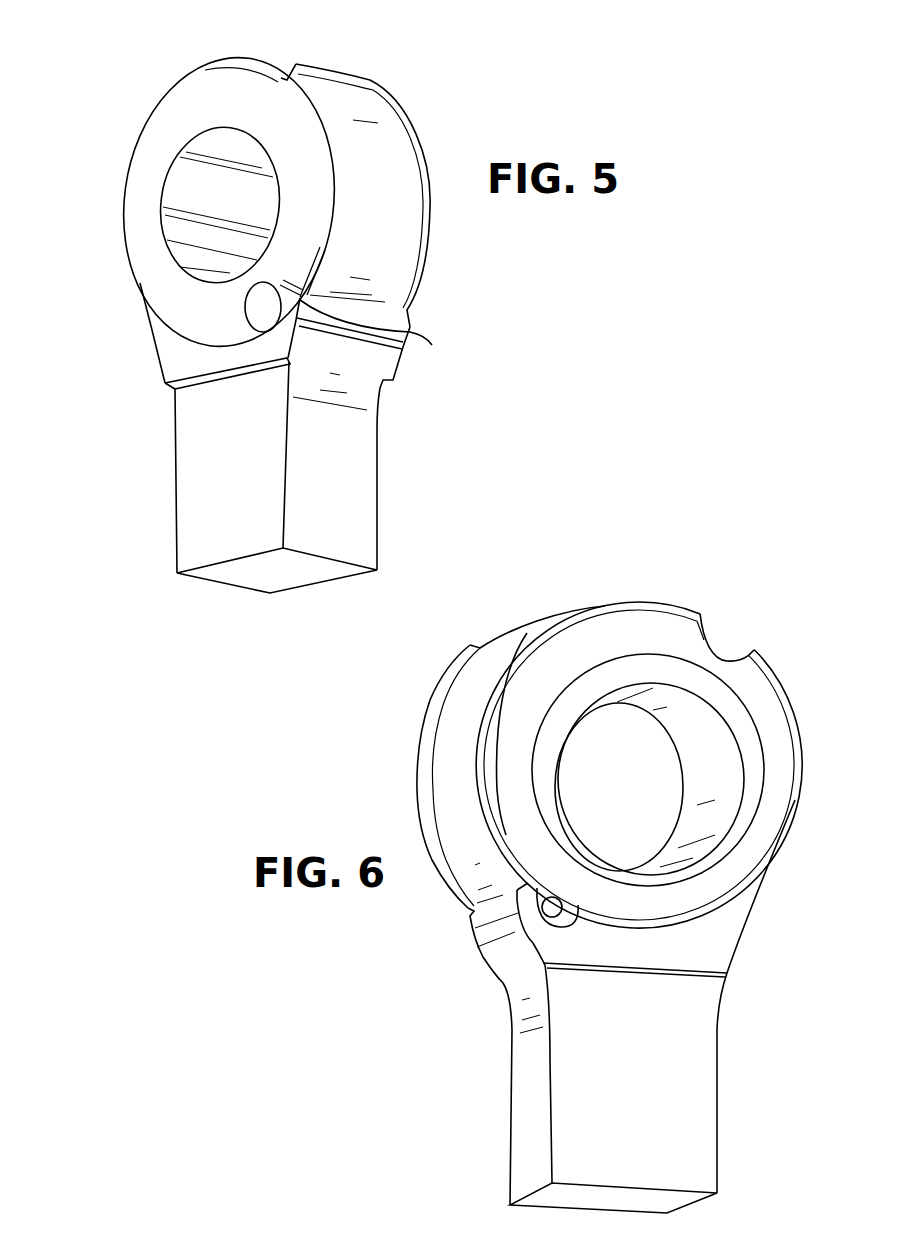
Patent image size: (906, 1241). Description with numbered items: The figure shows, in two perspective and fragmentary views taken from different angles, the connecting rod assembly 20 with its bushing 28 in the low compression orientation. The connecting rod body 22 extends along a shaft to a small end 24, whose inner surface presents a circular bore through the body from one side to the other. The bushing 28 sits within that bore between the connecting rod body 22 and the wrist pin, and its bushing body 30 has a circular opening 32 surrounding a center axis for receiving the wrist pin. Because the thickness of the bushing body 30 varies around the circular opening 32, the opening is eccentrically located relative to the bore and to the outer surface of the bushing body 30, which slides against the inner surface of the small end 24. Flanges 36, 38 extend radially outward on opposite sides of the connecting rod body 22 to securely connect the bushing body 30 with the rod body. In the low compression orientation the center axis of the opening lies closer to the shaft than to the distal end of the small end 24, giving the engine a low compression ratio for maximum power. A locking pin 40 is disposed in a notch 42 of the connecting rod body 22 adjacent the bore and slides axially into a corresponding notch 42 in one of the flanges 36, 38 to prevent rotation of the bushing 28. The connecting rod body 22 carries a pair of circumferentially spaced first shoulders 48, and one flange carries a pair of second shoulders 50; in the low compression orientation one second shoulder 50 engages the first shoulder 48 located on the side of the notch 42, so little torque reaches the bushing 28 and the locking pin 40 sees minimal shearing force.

In FIG. 5, the connecting rod assembly 20 is at (430, 108).
In FIG. 6, the connecting rod assembly 20 is at (466, 1054).
In FIG. 5, the connecting rod body 22 is at (380, 457).
In FIG. 6, the connecting rod body 22 is at (503, 1127).
In FIG. 5, the small end 24 is at (371, 92).
In FIG. 6, the small end 24 is at (540, 627).
In FIG. 5, the bushing 28 is at (125, 153).
In FIG. 6, the bushing 28 is at (776, 866).
In FIG. 5, the bushing body 30 is at (125, 237).
In FIG. 5, the circular opening 32 is at (210, 160).
In FIG. 6, the circular opening 32 is at (683, 778).
In FIG. 5, the flange 36 is at (130, 193).
In FIG. 6, the flange 38 is at (595, 637).
In FIG. 5, the locking pin 40 is at (260, 307).
In FIG. 5, the notch 42 is at (320, 250).
In FIG. 6, the notch 42 is at (723, 661).
In FIG. 5, the first shoulders 48 is at (287, 67).
In FIG. 5, the second shoulders 50 is at (150, 317).
In FIG. 6, the second shoulders 50 is at (557, 907).